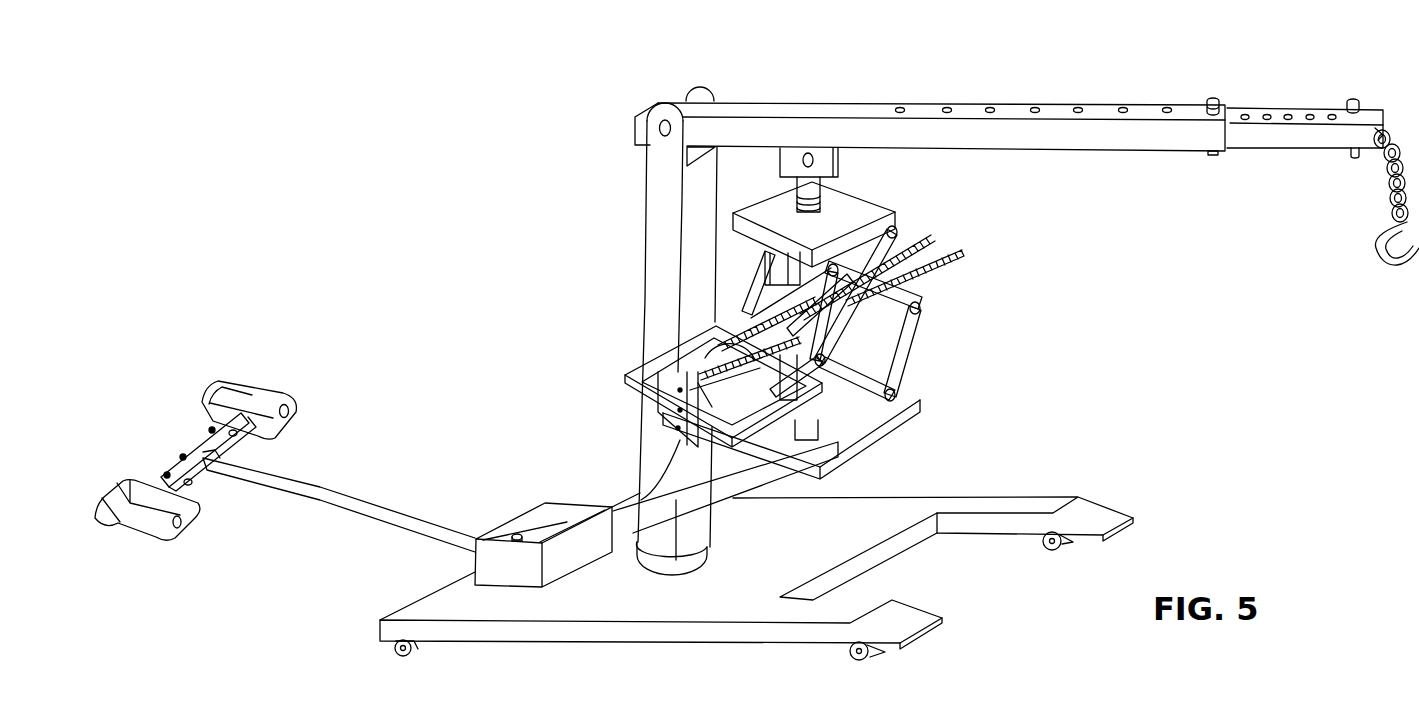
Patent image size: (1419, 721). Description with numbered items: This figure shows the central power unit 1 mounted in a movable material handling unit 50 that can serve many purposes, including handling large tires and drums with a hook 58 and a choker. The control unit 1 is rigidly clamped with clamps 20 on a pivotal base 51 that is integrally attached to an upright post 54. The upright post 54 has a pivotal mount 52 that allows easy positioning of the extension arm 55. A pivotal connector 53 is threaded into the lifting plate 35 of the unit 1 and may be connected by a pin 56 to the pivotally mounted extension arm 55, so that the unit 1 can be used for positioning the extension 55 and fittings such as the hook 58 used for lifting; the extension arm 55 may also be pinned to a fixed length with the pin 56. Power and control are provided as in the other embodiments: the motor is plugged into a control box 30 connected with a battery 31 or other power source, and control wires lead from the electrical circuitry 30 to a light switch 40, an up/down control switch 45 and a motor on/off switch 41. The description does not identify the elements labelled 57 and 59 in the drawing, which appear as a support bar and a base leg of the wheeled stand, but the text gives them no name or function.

The central power unit 1 is at (943, 300).
The clamps 20 is at (855, 424).
The control box 30 is at (560, 512).
The battery 31 is at (523, 523).
The lifting plate 35 is at (838, 205).
The light switch 40 is at (183, 457).
The motor on/off switch 41 is at (170, 473).
The up/down control switch 45 is at (212, 428).
The movable material handling unit 50 is at (625, 292).
The pivotal base 51 is at (913, 409).
The pivotal mount 52 is at (693, 563).
The pivotal connector 53 is at (822, 160).
The upright post 54 is at (667, 200).
The extension arm 55 is at (1246, 133).
The pin 56 is at (1218, 100).
The support bar 57 is at (737, 472).
The hook 58 is at (1378, 258).
The base leg 59 is at (380, 624).